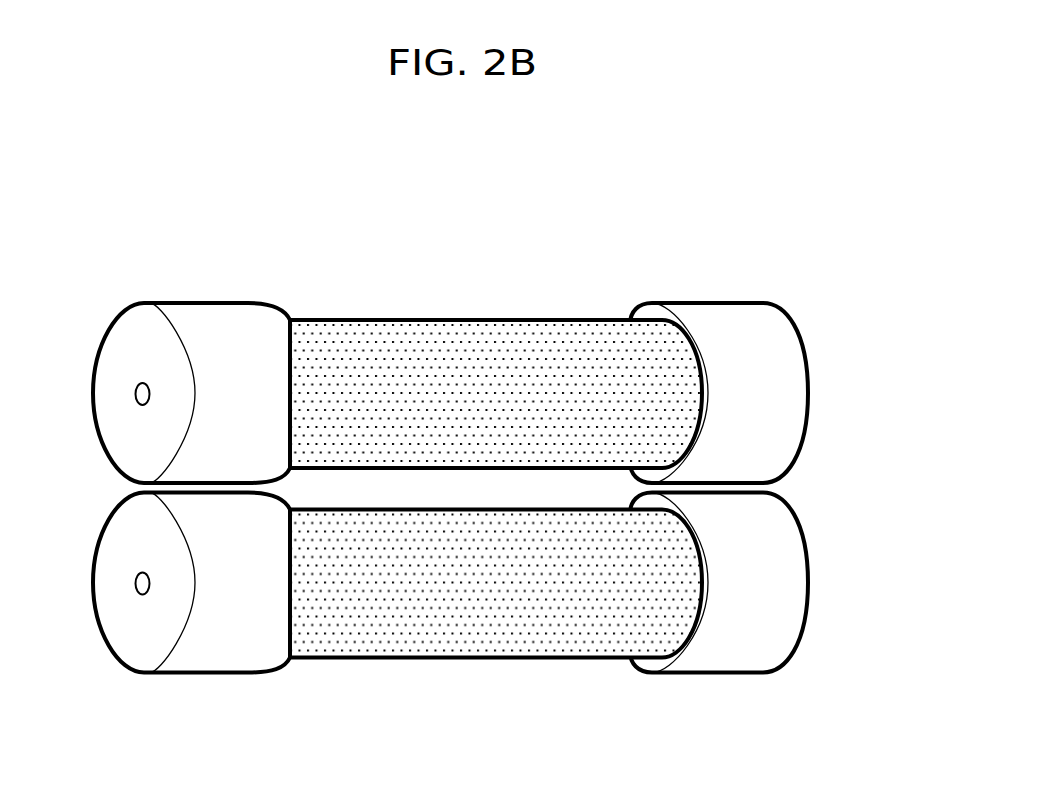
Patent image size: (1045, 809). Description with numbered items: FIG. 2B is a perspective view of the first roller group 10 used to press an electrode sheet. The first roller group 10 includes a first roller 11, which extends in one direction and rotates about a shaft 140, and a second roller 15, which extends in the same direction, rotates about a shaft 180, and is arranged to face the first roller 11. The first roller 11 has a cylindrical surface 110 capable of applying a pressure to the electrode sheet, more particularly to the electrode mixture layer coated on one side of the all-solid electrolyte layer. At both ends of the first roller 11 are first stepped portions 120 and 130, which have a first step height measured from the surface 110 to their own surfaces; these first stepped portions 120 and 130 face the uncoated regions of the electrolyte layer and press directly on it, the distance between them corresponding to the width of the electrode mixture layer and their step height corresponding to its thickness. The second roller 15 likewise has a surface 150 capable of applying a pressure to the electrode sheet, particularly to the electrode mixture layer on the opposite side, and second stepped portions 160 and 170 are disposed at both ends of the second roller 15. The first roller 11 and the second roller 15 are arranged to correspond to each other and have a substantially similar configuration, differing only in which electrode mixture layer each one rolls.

The first roller group 10 is at (800, 217).
The first roller 11 is at (845, 380).
The second roller 15 is at (845, 572).
The surface 110 is at (350, 303).
The first stepped portion 120 is at (716, 312).
The first stepped portion 130 is at (203, 312).
The shaft 140 is at (135, 394).
The surface 150 is at (560, 688).
The second stepped portion 160 is at (725, 663).
The second stepped portion 170 is at (208, 663).
The shaft 180 is at (135, 584).